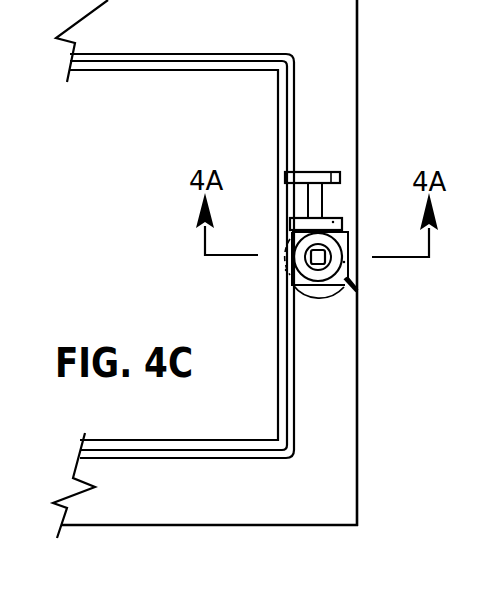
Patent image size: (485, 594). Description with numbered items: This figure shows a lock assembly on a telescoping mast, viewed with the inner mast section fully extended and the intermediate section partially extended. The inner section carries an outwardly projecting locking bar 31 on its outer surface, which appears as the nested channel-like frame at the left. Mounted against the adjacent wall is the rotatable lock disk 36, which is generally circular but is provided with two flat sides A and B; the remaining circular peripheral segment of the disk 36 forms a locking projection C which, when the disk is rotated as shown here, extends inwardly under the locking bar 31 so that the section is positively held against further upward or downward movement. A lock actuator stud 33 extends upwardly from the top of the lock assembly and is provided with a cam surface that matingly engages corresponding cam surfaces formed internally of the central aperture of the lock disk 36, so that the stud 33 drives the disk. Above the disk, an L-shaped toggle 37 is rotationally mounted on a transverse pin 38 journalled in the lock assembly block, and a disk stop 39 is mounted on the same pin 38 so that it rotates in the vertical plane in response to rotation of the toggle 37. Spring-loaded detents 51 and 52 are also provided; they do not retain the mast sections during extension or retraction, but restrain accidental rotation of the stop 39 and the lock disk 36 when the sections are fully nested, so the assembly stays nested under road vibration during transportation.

The locking bar 31 is at (278, 392).
The lock actuator stud 33 is at (318, 262).
The lock disk 36 is at (295, 288).
The L-shaped toggle 37 is at (312, 176).
The transverse pin 38 is at (309, 201).
The disk stop 39 is at (291, 222).
The spring-loaded detent 51 is at (344, 223).
The spring-loaded detent 52 is at (358, 290).
The flat side A is at (345, 262).
The flat side B is at (333, 222).
The locking projection C is at (286, 270).